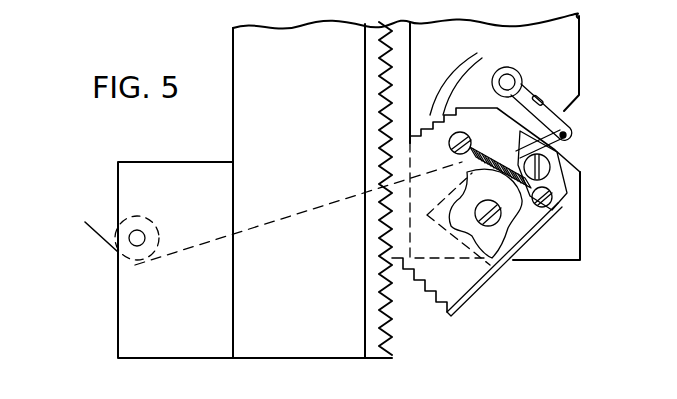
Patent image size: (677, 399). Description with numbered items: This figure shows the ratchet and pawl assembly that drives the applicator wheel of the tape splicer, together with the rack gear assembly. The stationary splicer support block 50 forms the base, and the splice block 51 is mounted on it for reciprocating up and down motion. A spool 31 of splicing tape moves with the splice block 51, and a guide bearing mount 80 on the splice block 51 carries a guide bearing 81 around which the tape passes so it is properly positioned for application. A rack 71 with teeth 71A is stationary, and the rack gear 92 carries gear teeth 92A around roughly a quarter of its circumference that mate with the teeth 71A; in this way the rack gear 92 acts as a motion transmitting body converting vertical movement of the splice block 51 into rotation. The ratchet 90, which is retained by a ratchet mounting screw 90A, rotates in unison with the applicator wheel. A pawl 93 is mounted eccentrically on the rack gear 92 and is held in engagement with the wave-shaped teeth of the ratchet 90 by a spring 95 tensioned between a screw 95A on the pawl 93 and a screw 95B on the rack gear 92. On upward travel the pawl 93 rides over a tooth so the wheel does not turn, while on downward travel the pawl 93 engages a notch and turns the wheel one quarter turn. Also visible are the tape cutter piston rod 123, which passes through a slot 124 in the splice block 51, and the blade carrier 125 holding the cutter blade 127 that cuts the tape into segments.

The spool of splicing tape 31 is at (102, 238).
The splicer support block 50 is at (318, 98).
The splice block 51 is at (567, 35).
The rack 71 is at (366, 28).
The teeth on rack 71A is at (398, 12).
The guide bearing mount 80 is at (192, 208).
The guide bearing 81 is at (137, 230).
The ratchet 90 is at (503, 262).
The ratchet mounting screw 90A is at (502, 250).
The rack gear 92 is at (443, 312).
The gear teeth 92A is at (476, 58).
The pawl 93 is at (533, 220).
The spring 95 is at (510, 155).
The screw on pawl 95A is at (555, 200).
The screw on rack gear 95B is at (448, 138).
The tape cutter piston rod 123 is at (503, 70).
The slot 124 is at (540, 100).
The blade carrier 125 is at (557, 113).
The cutter blade 127 is at (553, 147).